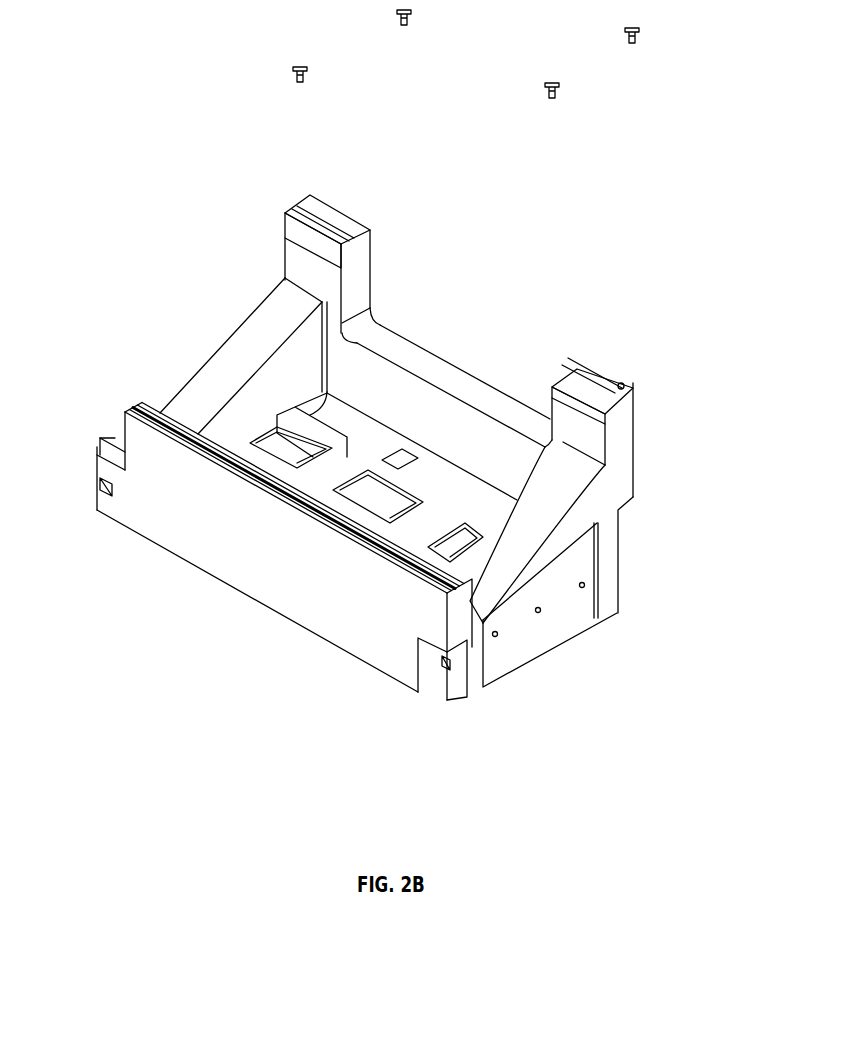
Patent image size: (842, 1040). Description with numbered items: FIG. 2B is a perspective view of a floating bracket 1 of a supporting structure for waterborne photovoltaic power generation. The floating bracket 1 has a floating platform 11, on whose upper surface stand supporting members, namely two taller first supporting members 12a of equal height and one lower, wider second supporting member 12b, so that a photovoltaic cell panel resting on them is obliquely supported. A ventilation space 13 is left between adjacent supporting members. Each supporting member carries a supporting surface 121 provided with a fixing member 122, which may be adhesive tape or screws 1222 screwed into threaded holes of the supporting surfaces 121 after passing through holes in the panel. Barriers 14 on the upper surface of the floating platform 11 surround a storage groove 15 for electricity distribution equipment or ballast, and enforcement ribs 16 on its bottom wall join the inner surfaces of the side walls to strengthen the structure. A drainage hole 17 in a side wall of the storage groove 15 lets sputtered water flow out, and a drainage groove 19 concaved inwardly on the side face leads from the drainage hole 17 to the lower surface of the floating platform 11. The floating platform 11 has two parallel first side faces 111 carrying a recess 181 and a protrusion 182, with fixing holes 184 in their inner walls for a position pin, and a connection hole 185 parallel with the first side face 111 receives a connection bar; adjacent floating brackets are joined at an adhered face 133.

The floating bracket 1 is at (228, 630).
The floating platform 11 is at (227, 560).
The first side face 111 is at (480, 682).
The first supporting member 12a is at (303, 262).
The second supporting member 12b is at (118, 426).
The supporting surface 121 is at (337, 247).
The fixing member 122 is at (293, 205).
The screw 1222 is at (640, 36).
The ventilation space 13 is at (460, 303).
The adhered face 133 is at (540, 553).
The barrier 14 is at (240, 347).
The storage groove 15 is at (357, 380).
The enforcement rib 16 is at (373, 447).
The drainage hole 17 is at (582, 585).
The recess 181 is at (438, 678).
The protrusion 182 is at (97, 470).
The fixing hole 184 is at (115, 442).
The connection hole 185 is at (103, 495).
The drainage groove 19 is at (582, 560).